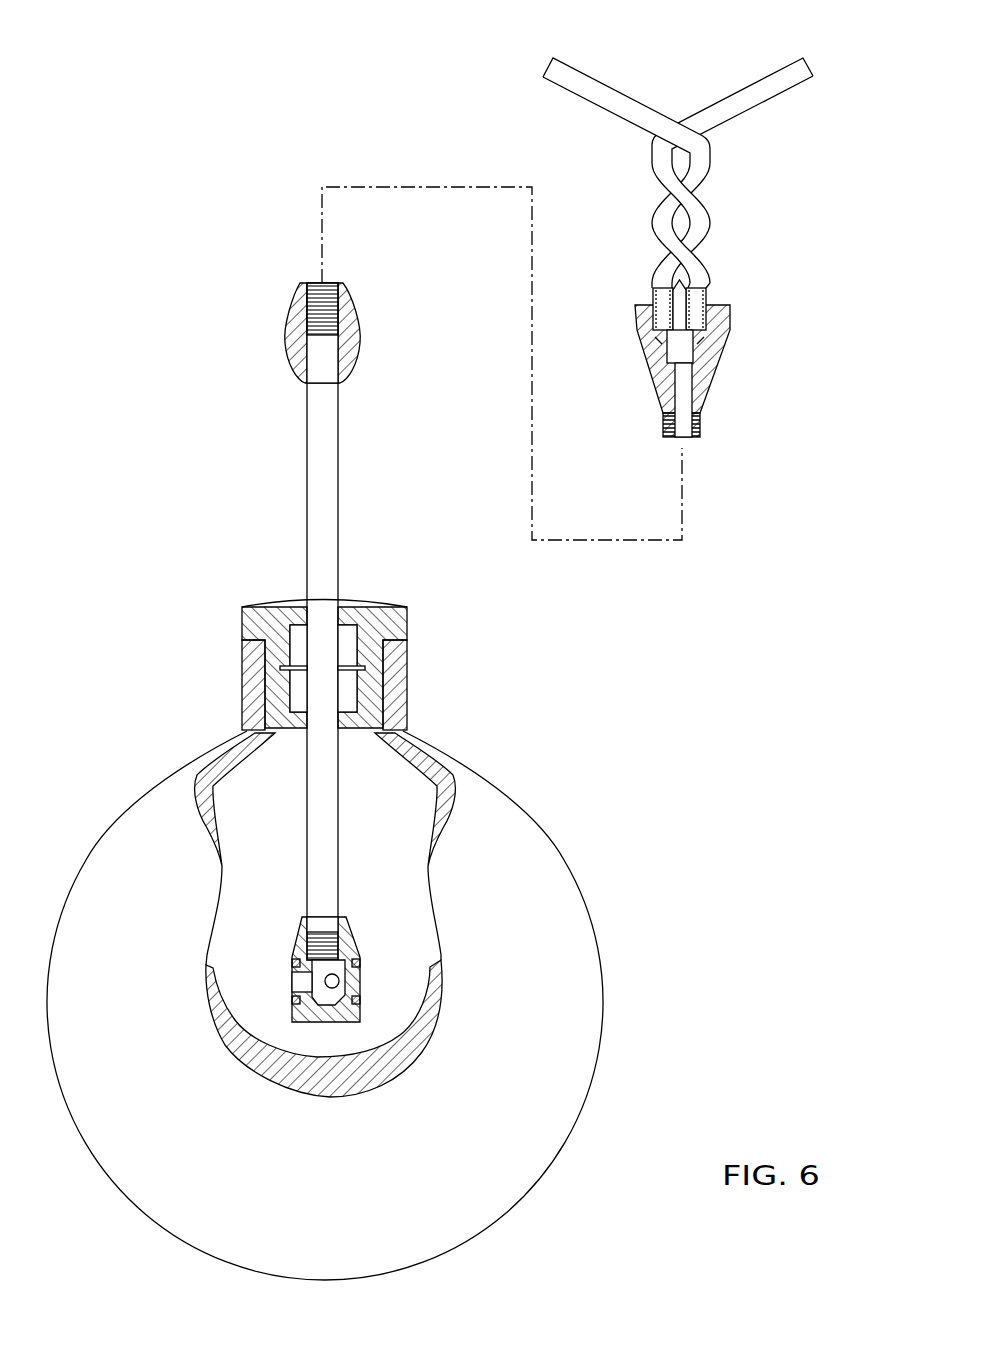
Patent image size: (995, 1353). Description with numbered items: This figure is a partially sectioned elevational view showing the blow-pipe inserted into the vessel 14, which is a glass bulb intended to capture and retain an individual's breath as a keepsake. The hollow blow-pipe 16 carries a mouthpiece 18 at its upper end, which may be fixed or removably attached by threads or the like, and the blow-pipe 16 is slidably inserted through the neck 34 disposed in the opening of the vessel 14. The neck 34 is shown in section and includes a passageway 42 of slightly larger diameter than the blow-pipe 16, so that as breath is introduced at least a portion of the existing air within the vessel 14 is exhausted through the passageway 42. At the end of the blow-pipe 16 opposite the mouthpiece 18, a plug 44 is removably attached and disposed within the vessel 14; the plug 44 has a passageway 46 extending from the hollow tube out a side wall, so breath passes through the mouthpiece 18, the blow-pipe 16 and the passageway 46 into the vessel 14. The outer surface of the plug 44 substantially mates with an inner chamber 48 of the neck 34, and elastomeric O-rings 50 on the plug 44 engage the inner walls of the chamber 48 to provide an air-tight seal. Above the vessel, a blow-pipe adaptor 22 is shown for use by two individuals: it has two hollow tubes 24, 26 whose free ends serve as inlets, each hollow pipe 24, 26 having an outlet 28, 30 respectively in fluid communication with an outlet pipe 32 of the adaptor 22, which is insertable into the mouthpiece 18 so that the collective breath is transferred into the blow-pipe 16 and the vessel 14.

The vessel 14 is at (525, 793).
The hollow blow-pipe 16 is at (238, 526).
The mouthpiece 18 is at (357, 340).
The blow-pipe adaptor 22 is at (697, 245).
The hollow tube 24 is at (598, 83).
The hollow tube 26 is at (792, 95).
The outlet 28 is at (712, 345).
The outlet 30 is at (641, 362).
The outlet pipe 32 is at (699, 420).
The neck 34 is at (395, 602).
The passageway 42 is at (298, 643).
The plug 44 is at (276, 976).
The passageway 46 is at (287, 991).
The inner chamber 48 is at (350, 700).
The O-rings 50 is at (372, 960).